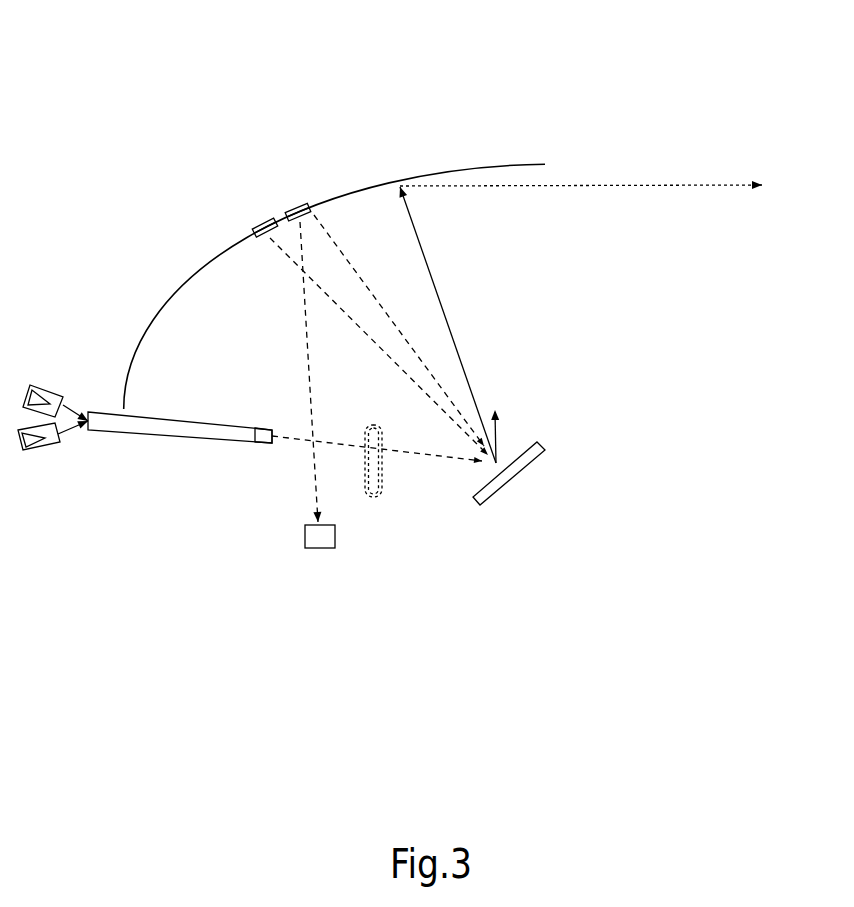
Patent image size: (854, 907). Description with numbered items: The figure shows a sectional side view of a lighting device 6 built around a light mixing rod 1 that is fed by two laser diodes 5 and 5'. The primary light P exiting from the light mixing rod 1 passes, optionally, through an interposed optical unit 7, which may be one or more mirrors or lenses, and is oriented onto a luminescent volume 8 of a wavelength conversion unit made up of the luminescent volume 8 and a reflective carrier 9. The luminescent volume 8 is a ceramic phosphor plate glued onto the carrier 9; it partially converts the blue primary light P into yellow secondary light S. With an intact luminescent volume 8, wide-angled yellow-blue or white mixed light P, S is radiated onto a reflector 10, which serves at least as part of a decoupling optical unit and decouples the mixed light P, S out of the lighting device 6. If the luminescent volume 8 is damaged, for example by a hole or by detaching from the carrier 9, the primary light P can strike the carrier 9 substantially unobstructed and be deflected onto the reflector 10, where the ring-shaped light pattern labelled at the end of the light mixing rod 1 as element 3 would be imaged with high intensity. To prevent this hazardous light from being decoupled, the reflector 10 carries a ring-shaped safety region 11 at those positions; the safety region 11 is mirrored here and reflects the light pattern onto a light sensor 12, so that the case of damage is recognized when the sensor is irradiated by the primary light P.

The lighting device 6 is at (118, 84).
The reflector 10 is at (163, 307).
The safety region 11 is at (262, 224).
The primary light P is at (350, 260).
The secondary light S is at (440, 300).
The luminescent volume 8 is at (512, 444).
The reflective carrier 9 is at (512, 485).
The optical unit 7 is at (370, 497).
The light sensor 12 is at (320, 549).
The light mixing rod 1 is at (150, 440).
The first mirror M1 3 is at (252, 432).
The laser diode 5' is at (55, 370).
The laser diode 5 is at (53, 468).